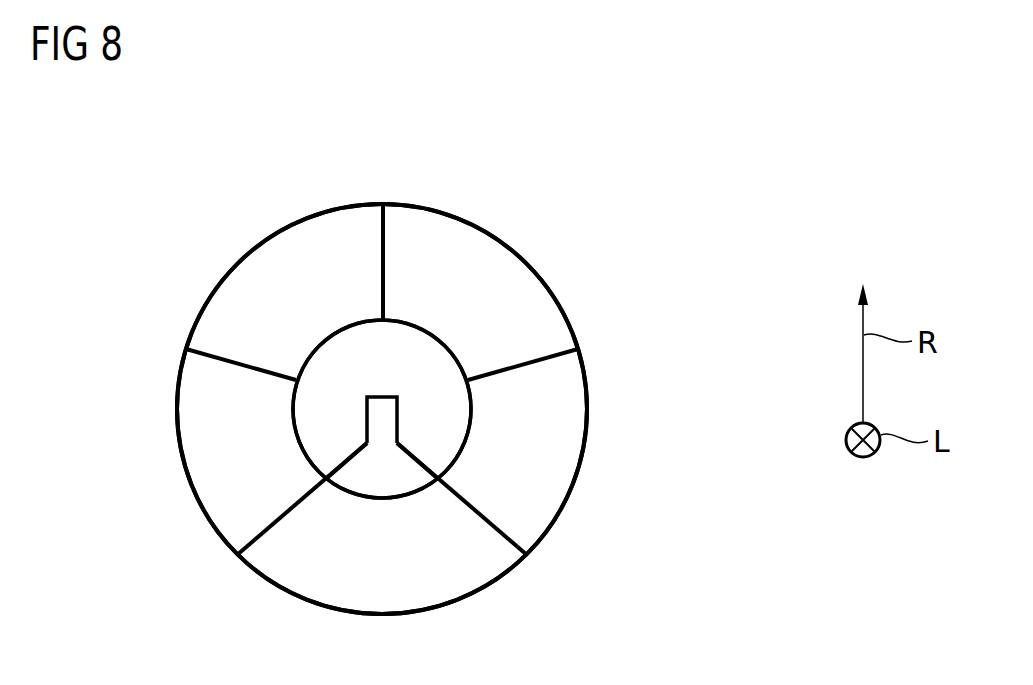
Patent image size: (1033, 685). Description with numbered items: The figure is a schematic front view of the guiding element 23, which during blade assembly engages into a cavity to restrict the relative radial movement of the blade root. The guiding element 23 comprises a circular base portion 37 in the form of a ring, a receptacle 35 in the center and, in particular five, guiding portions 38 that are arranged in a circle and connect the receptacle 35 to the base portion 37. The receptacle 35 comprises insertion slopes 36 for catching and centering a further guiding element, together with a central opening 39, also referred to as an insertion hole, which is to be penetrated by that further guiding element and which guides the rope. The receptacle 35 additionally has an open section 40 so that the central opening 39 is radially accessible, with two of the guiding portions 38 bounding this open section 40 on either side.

The guiding element 23 is at (492, 214).
The receptacle 35 is at (471, 400).
The insertion slopes 36 is at (316, 417).
The circular base portion 37 is at (578, 474).
The guiding portions 38 is at (380, 231).
The central opening 39 is at (385, 423).
The open section 40 is at (350, 472).